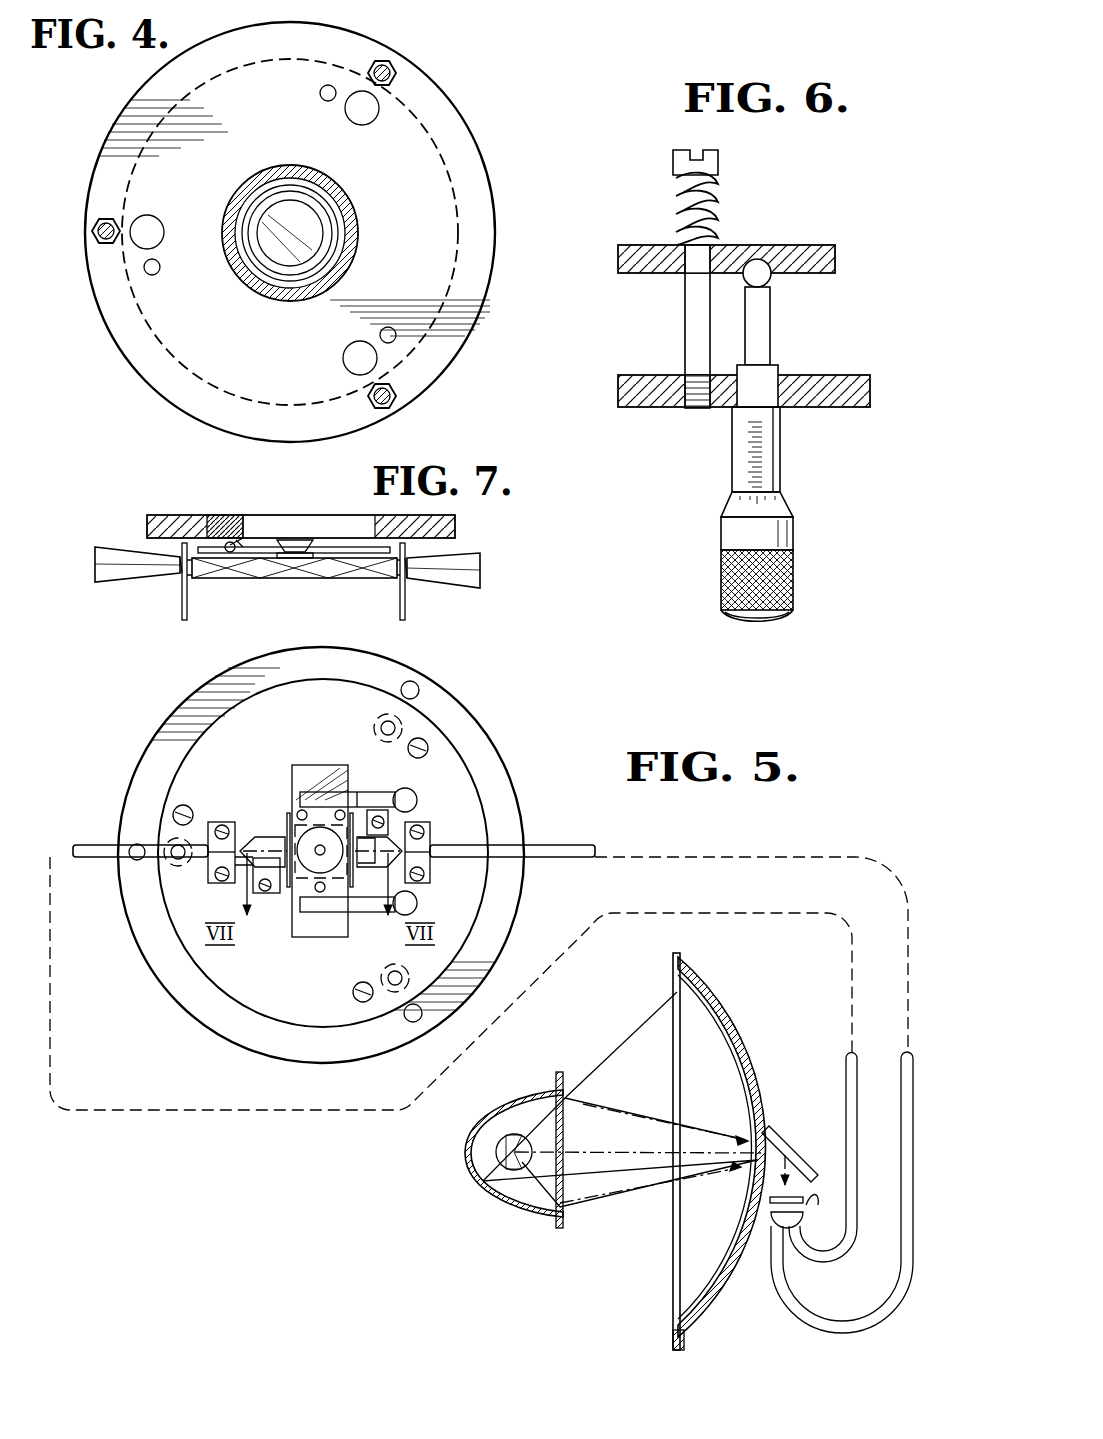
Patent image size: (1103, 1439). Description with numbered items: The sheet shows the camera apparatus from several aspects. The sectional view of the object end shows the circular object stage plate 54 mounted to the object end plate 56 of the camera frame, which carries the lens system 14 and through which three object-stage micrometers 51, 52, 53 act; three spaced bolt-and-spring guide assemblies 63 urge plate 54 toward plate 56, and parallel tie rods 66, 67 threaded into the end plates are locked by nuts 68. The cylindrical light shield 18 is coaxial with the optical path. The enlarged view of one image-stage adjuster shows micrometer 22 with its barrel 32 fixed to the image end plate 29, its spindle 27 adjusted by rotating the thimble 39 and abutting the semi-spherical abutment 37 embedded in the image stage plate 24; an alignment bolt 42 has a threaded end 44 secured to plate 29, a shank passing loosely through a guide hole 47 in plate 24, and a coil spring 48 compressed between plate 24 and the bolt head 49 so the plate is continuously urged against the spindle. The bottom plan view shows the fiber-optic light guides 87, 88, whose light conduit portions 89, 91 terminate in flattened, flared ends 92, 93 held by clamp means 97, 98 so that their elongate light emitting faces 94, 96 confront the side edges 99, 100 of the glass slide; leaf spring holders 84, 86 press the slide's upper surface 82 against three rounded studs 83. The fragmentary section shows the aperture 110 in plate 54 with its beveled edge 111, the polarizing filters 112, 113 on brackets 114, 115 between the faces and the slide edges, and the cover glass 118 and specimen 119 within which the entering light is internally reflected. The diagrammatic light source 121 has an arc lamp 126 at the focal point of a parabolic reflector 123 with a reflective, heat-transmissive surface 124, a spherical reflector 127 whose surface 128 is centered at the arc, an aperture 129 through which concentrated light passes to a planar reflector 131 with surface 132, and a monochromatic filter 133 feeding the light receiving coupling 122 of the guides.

In FIG. 4, the lens system 14 is at (345, 215).
In FIG. 4, the light shield 18 is at (242, 272).
In FIG. 6, the micrometer 22 is at (828, 508).
In FIG. 6, the image stage plate 24 is at (822, 248).
In FIG. 6, the spindle 27 is at (760, 335).
In FIG. 6, the image end plate 29 is at (632, 375).
In FIG. 6, the barrel 32 is at (775, 432).
In FIG. 6, the abutment 37 is at (770, 283).
In FIG. 6, the thimble 39 is at (780, 582).
In FIG. 6, the alignment bolt 42 is at (742, 196).
In FIG. 6, the threaded end 44 is at (700, 408).
In FIG. 6, the guide hole 47 is at (690, 270).
In FIG. 6, the coil spring 48 is at (680, 215).
In FIG. 6, the bolt head 49 is at (673, 160).
In FIG. 4, the micrometer 51 is at (160, 210).
In FIG. 5, the micrometer 51 is at (162, 864).
In FIG. 4, the micrometer 52 is at (352, 86).
In FIG. 5, the micrometer 52 is at (404, 725).
In FIG. 4, the micrometer 53 is at (338, 366).
In FIG. 5, the micrometer 53 is at (397, 995).
In FIG. 4, the object stage plate 54 is at (443, 150).
In FIG. 7, the object stage plate 54 is at (170, 517).
In FIG. 5, the object stage plate 54 is at (175, 763).
In FIG. 4, the object end plate 56 is at (483, 207).
In FIG. 5, the object end plate 56 is at (175, 710).
In FIG. 4, the alignment bolt and spring guide assembly 63 is at (402, 336).
In FIG. 5, the alignment bolt and spring guide assembly 63 is at (428, 746).
In FIG. 4, the tie rod 66 is at (93, 226).
In FIG. 4, the tie rod 67 is at (393, 68).
In FIG. 4, the nut 68 is at (395, 80).
In FIG. 7, the upper surface of glass slide 82 is at (232, 552).
In FIG. 7, the rounded stud 83 is at (293, 540).
In FIG. 5, the rounded stud 83 is at (287, 800).
In FIG. 5, the leaf spring holder 84 is at (318, 800).
In FIG. 5, the leaf spring holder 86 is at (333, 915).
In FIG. 5, the fiber-optic light guide 87 is at (238, 886).
In FIG. 5, the fiber-optic light guide 88 is at (392, 866).
In FIG. 5, the light conduit portion 89 is at (80, 845).
In FIG. 5, the light conduit portion 91 is at (575, 845).
In FIG. 7, the flattened and flared end 92 is at (105, 555).
In FIG. 5, the flattened and flared end 92 is at (275, 845).
In FIG. 7, the flattened and flared end 93 is at (455, 570).
In FIG. 5, the flattened and flared end 93 is at (372, 860).
In FIG. 7, the light emitting face 94 is at (183, 562).
In FIG. 7, the light emitting face 96 is at (405, 562).
In FIG. 5, the clamp means 97 is at (210, 858).
In FIG. 5, the clamp means 98 is at (422, 850).
In FIG. 7, the side edge of slide 99 is at (188, 570).
In FIG. 7, the side edge of slide 100 is at (400, 570).
In FIG. 7, the aperture 110 is at (225, 517).
In FIG. 5, the aperture 110 is at (320, 890).
In FIG. 7, the beveled edge 111 is at (373, 525).
In FIG. 7, the polarizing filter 112 is at (183, 610).
In FIG. 5, the polarizing filter 112 is at (287, 815).
In FIG. 7, the polarizing filter 113 is at (405, 610).
In FIG. 5, the polarizing filter 113 is at (355, 812).
In FIG. 5, the supporting bracket 114 is at (258, 878).
In FIG. 5, the supporting bracket 115 is at (390, 822).
In FIG. 7, the cover glass 118 is at (243, 545).
In FIG. 5, the cover glass 118 is at (348, 800).
In FIG. 7, the specimen 119 is at (296, 560).
In FIG. 5, the light source 121 is at (518, 1266).
In FIG. 5, the light receiving coupling 122 is at (772, 1220).
In FIG. 5, the parabolic reflector 123 is at (460, 1170).
In FIG. 5, the light reflective heat transmissive surface 124 is at (468, 1140).
In FIG. 5, the arc lamp 126 is at (497, 1163).
In FIG. 5, the spherical reflector 127 is at (722, 1020).
In FIG. 5, the light reflective heat transmissive surface 128 is at (735, 1040).
In FIG. 5, the aperture 129 is at (735, 1168).
In FIG. 5, the planar reflector 131 is at (781, 1130).
In FIG. 5, the light reflective heat transmissive surface 132 is at (800, 1163).
In FIG. 5, the monochromatic filter 133 is at (803, 1205).